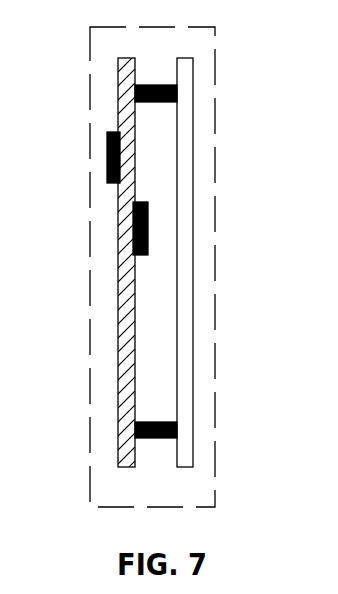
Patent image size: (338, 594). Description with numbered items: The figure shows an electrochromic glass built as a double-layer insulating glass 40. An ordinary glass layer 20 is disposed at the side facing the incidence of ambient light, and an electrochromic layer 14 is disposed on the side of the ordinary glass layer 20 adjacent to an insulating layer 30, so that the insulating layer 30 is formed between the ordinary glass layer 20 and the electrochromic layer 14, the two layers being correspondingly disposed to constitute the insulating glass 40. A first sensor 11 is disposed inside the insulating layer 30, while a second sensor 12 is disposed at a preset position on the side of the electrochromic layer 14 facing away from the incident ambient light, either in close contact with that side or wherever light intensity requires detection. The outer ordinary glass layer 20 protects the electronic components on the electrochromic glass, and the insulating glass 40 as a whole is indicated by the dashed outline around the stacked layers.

The first sensor 11 is at (133, 243).
The second sensor 12 is at (107, 163).
The electrochromic layer 14 is at (118, 396).
The ordinary glass layer 20 is at (193, 127).
The insulating layer 30 is at (165, 322).
The insulating glass 40 is at (215, 432).